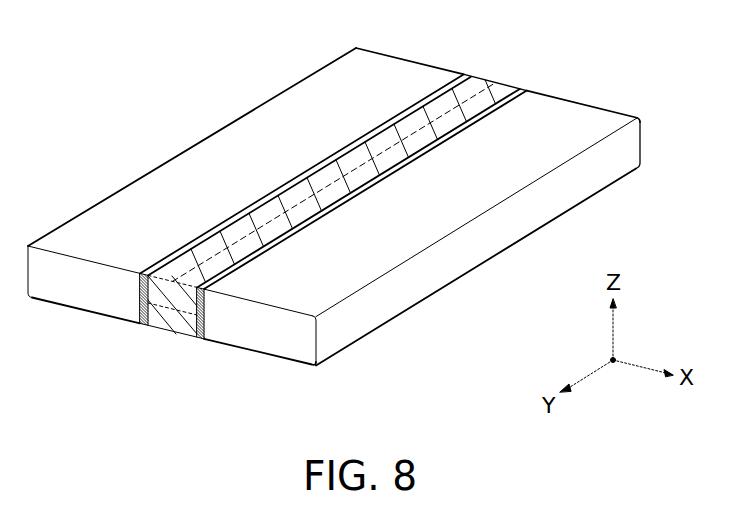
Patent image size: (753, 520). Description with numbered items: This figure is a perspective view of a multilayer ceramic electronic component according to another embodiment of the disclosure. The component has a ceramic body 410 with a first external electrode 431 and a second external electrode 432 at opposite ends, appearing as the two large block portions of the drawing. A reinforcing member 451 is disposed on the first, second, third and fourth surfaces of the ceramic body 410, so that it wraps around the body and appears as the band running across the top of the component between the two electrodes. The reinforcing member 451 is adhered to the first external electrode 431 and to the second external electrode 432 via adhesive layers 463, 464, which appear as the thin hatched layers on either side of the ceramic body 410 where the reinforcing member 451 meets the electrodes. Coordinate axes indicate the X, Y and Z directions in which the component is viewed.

The ceramic body 410 is at (165, 323).
The first external electrode 431 is at (187, 168).
The second external electrode 432 is at (473, 250).
The reinforcing member 451 is at (305, 219).
The adhesive layer 463 is at (143, 327).
The adhesive layer 464 is at (198, 338).